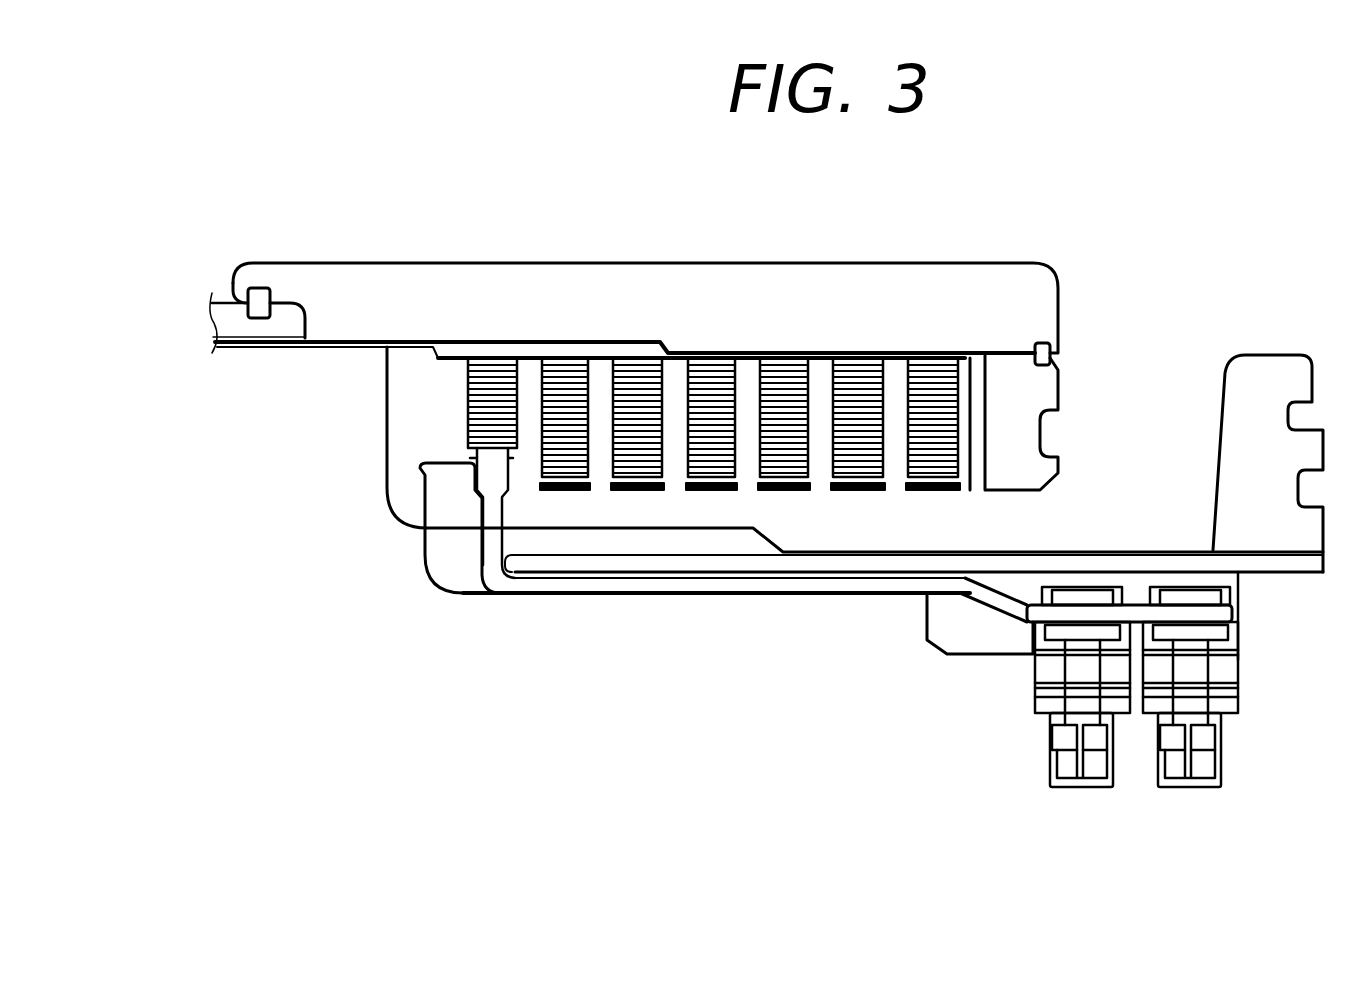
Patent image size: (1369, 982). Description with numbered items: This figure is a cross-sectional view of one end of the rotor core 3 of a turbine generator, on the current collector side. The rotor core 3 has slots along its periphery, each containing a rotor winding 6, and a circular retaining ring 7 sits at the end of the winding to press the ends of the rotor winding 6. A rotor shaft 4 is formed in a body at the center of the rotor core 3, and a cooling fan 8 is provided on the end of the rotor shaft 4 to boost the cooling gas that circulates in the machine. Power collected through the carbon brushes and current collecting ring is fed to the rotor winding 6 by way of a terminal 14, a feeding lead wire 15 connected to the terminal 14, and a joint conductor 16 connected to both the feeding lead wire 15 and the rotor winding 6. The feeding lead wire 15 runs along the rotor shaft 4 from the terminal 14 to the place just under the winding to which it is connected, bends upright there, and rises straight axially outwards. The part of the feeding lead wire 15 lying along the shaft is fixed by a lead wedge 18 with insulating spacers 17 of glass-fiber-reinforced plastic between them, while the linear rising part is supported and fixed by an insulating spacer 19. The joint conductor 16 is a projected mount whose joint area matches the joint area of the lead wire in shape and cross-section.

The rotor core 3 is at (245, 410).
The rotor shaft 4 is at (845, 628).
The rotor winding 6 is at (468, 405).
The retaining ring 7 is at (741, 282).
The cooling fan 8 is at (1270, 368).
The terminal 14 is at (1080, 790).
The feeding lead wire 15 is at (558, 597).
The joint conductor 16 is at (470, 448).
The insulating spacer 17 is at (682, 578).
The lead wedge 18 is at (763, 560).
The insulating spacer 19 is at (438, 510).